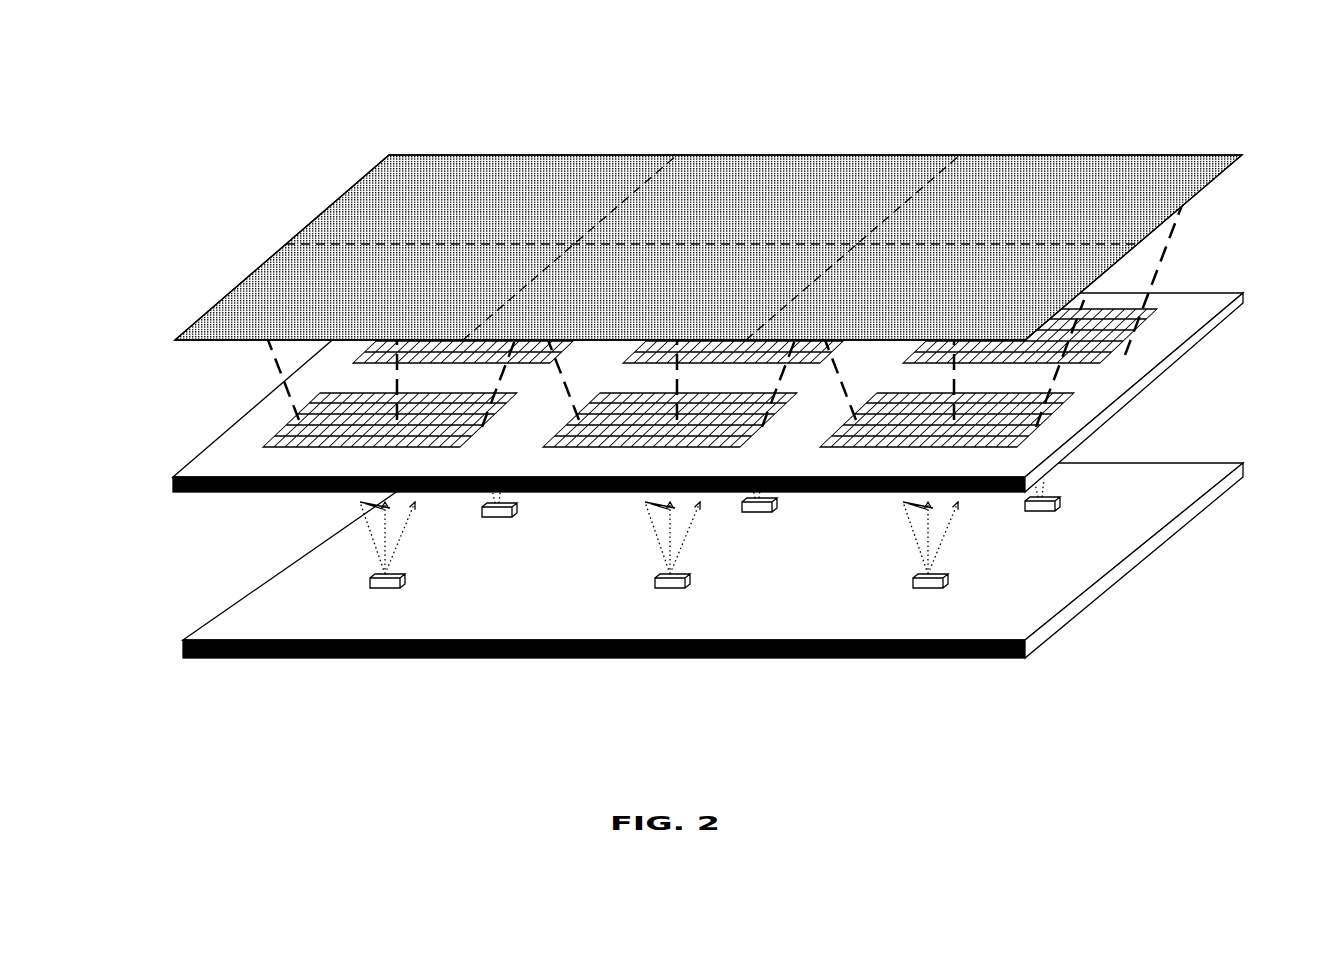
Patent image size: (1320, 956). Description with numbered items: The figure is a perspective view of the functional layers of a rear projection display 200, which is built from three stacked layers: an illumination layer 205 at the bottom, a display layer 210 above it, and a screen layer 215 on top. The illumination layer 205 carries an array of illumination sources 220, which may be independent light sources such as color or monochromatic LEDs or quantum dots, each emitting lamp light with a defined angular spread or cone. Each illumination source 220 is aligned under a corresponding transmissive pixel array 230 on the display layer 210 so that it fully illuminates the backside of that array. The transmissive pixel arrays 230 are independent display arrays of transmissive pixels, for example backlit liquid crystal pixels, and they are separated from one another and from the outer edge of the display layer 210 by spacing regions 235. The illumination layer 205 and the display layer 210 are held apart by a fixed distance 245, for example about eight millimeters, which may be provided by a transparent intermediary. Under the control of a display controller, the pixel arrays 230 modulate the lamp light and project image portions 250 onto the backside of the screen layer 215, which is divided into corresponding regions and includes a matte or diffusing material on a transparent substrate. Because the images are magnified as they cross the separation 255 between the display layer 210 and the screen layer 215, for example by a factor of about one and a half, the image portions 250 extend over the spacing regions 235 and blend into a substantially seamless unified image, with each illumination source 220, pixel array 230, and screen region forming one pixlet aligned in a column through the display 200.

The rear projection display 200 is at (280, 103).
The illumination layer 205 is at (636, 560).
The display layer 210 is at (657, 348).
The screen layer 215 is at (691, 247).
The illumination sources 220 is at (378, 590).
The transmissive pixel arrays 230 is at (328, 430).
The spacing regions 235 is at (221, 463).
The fixed distance 245 is at (1252, 298).
The image portions 250 is at (447, 209).
The separation 255 is at (1252, 158).